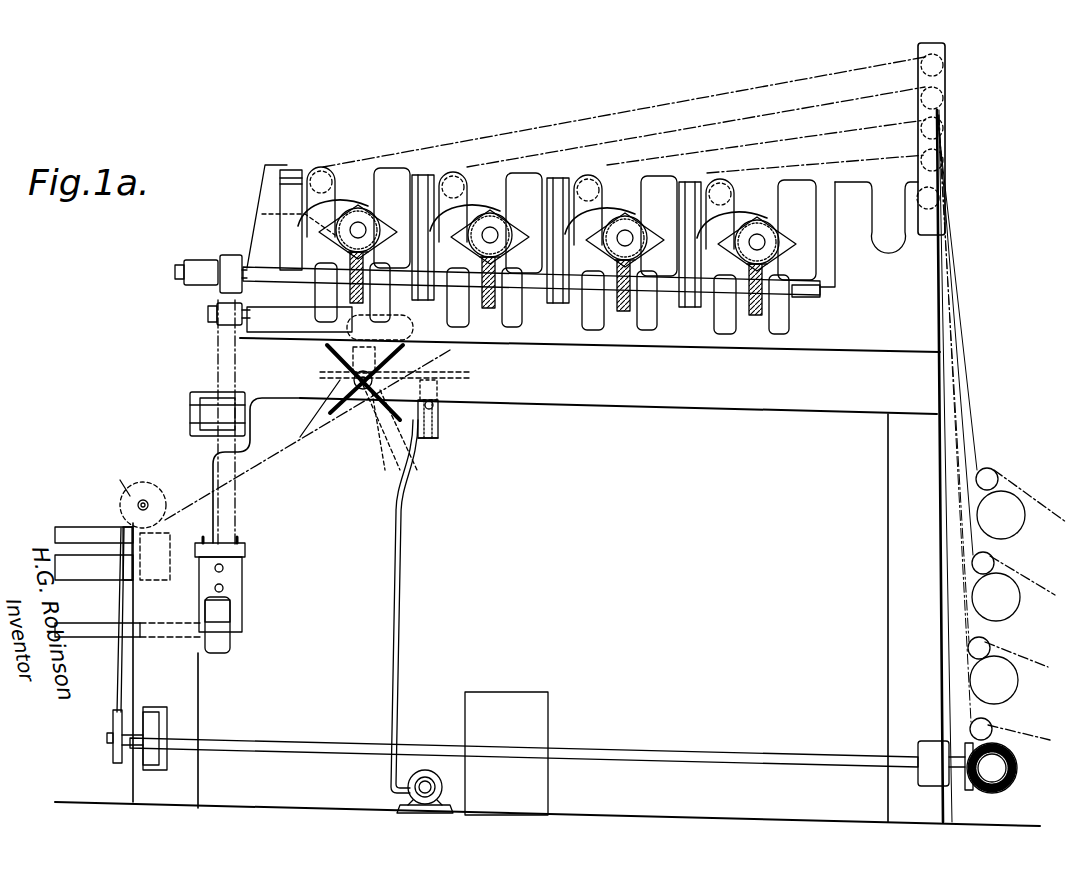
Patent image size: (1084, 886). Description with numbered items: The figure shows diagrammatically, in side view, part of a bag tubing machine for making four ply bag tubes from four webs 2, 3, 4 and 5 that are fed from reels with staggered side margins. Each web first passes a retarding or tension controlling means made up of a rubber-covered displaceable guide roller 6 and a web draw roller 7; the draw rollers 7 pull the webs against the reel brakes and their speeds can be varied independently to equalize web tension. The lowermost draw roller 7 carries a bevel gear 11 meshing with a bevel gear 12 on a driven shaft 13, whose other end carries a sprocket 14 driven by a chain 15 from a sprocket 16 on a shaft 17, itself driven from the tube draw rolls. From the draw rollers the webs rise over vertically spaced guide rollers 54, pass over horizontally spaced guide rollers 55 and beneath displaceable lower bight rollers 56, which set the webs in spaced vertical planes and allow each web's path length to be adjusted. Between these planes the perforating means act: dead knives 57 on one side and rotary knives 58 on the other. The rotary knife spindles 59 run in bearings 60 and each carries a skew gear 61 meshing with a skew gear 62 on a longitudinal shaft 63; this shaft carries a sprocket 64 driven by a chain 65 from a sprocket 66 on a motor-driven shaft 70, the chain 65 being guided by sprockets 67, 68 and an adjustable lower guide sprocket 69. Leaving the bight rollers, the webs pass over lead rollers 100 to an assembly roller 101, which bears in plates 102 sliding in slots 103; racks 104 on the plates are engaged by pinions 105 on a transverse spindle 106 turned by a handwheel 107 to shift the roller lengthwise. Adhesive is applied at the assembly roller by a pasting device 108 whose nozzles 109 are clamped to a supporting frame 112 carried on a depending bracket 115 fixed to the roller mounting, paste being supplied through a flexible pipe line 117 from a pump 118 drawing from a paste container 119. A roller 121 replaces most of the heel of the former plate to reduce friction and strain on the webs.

The web 2 is at (855, 72).
The web 3 is at (862, 103).
The web 4 is at (866, 133).
The web 5 is at (868, 163).
The displaceable guide roller 6 is at (996, 472).
The web draw roller 7 is at (1025, 518).
The bevel gear 11 is at (1012, 780).
The bevel gear 12 is at (970, 790).
The driven shaft 13 is at (690, 755).
The sprocket 14 is at (112, 752).
The chain 15 is at (118, 660).
The sprocket 16 is at (128, 518).
The shaft 17 is at (90, 525).
The guide rollers 54 is at (945, 65).
The guide rollers 55 is at (321, 170).
The lower bight rollers 56 is at (425, 268).
The dead knives 57 is at (690, 240).
The rotary knives 58 is at (348, 200).
The spindles 59 is at (358, 225).
The bearings 60 is at (385, 222).
The skew gear 61 is at (502, 250).
The skew gears 62 is at (350, 282).
The longitudinally extending shaft 63 is at (268, 270).
The sprocket 64 is at (232, 252).
The chain 65 is at (218, 358).
The sprocket 66 is at (232, 648).
The guide sprocket 67 is at (208, 311).
The guide sprocket 68 is at (205, 404).
The lower guide sprocket 69 is at (240, 600).
The shaft 70 is at (105, 625).
The lead rollers 100 is at (440, 372).
The assembly roller 101 is at (380, 433).
The plates 102 is at (413, 436).
The slots 103 is at (305, 395).
The racks 104 is at (305, 420).
The pinions 105 is at (366, 407).
The transverse spindle 106 is at (358, 390).
The handwheel 107 is at (340, 348).
The pasting device 108 is at (440, 406).
The nozzles 109 is at (440, 390).
The supporting frame 112 is at (438, 425).
The depending bracket 115 is at (437, 438).
The flexible pipe line 117 is at (402, 545).
The pump 118 is at (424, 778).
The paste container 119 is at (550, 715).
The roller 121 is at (108, 472).